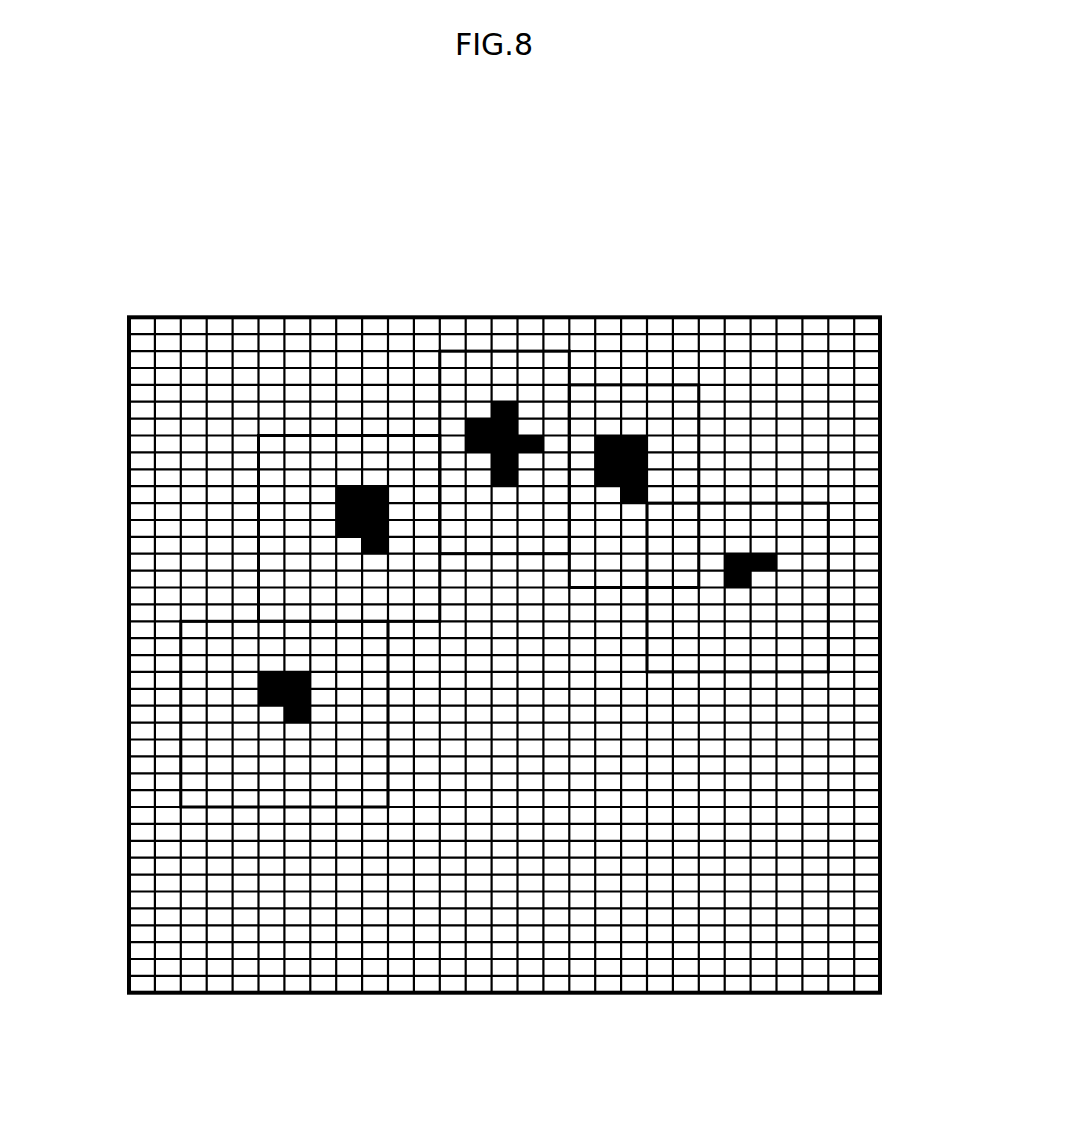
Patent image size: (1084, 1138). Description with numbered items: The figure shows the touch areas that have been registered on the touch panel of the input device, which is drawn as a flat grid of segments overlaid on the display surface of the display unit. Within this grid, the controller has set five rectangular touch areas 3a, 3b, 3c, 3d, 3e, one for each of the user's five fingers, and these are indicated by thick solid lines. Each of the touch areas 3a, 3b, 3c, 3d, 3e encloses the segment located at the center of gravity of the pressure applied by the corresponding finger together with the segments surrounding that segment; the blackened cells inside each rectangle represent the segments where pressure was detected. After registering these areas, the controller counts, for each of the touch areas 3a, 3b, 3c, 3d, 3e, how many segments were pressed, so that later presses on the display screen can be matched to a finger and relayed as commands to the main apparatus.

The touch area 3a is at (217, 755).
The touch area 3b is at (312, 468).
The touch area 3c is at (502, 385).
The touch area 3d is at (655, 415).
The touch area 3e is at (788, 592).